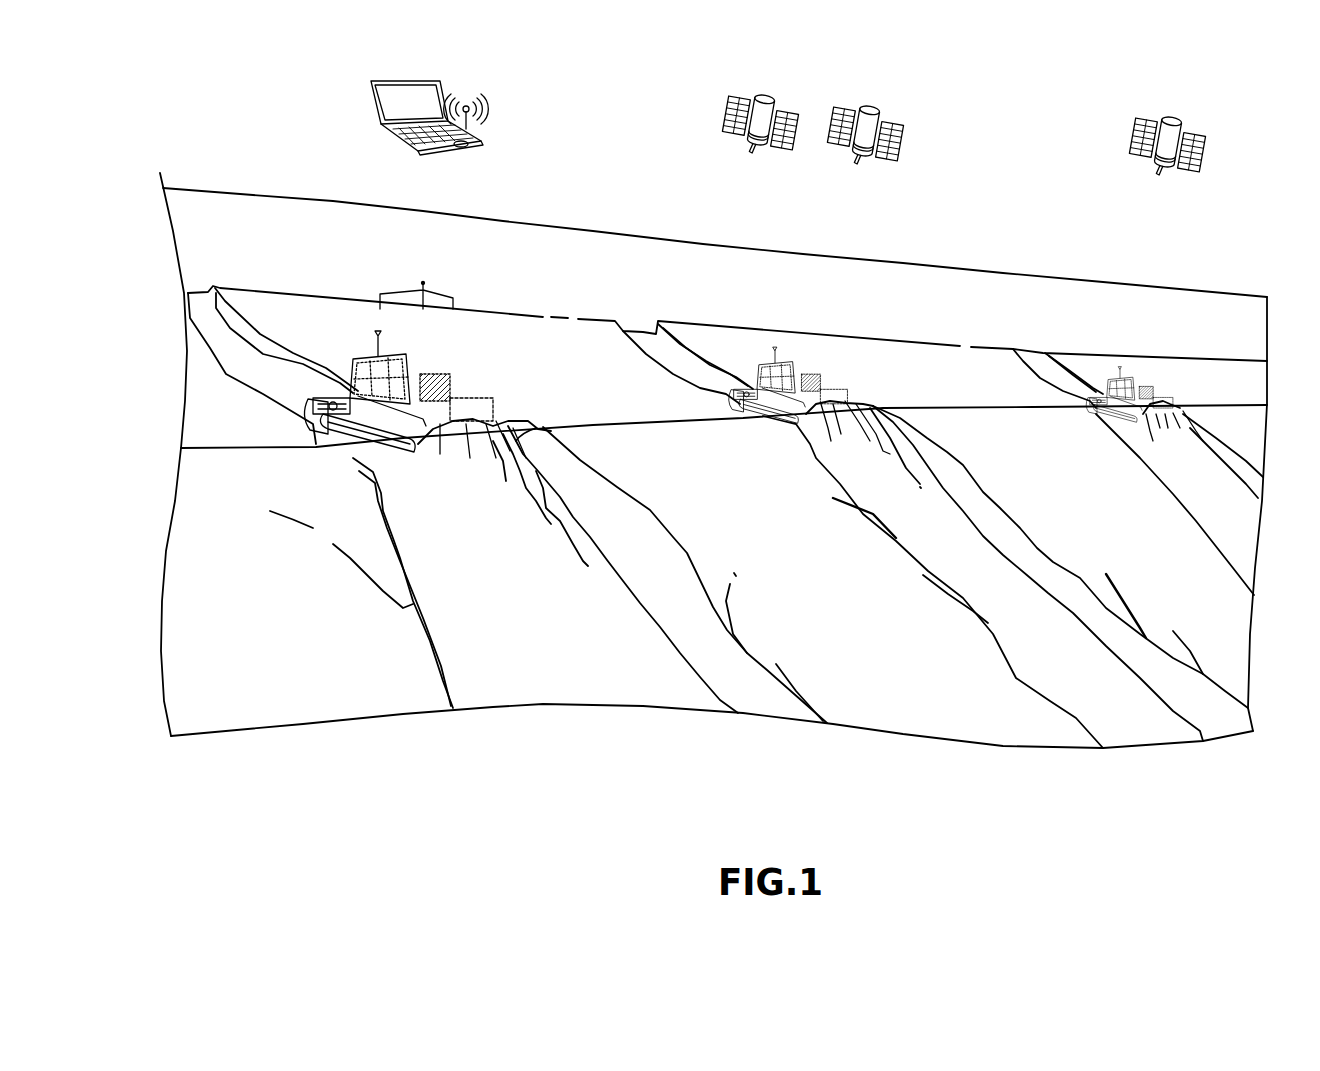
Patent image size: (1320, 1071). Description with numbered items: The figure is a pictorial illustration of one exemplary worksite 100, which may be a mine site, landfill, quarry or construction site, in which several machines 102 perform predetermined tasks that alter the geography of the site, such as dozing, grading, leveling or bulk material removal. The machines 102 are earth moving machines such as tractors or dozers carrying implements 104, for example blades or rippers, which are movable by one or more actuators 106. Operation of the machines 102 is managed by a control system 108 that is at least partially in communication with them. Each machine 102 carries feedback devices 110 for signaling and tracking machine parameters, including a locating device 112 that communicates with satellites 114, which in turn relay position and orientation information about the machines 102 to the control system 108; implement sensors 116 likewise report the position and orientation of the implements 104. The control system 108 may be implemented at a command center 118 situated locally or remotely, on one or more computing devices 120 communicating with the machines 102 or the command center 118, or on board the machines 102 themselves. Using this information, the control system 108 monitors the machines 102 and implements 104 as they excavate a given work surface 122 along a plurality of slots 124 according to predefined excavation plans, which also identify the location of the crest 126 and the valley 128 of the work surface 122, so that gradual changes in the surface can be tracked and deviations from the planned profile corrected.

The worksite 100 is at (1060, 217).
The machine 102 is at (740, 380).
The implement 104 is at (512, 407).
The actuator 106 is at (815, 351).
The control system 108 is at (412, 175).
The feedback device 110 is at (762, 337).
The locating device 112 is at (397, 345).
The satellite 114 is at (760, 100).
The implement sensor 116 is at (413, 390).
The command center 118 is at (383, 276).
The computing device 120 is at (452, 69).
The work surface 122 is at (583, 346).
The slot 124 is at (248, 364).
The crest 126 is at (207, 443).
The valley 128 is at (204, 574).